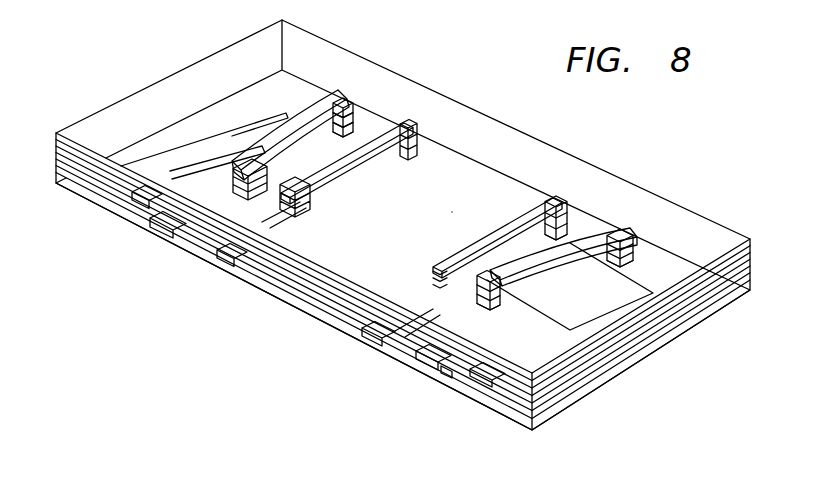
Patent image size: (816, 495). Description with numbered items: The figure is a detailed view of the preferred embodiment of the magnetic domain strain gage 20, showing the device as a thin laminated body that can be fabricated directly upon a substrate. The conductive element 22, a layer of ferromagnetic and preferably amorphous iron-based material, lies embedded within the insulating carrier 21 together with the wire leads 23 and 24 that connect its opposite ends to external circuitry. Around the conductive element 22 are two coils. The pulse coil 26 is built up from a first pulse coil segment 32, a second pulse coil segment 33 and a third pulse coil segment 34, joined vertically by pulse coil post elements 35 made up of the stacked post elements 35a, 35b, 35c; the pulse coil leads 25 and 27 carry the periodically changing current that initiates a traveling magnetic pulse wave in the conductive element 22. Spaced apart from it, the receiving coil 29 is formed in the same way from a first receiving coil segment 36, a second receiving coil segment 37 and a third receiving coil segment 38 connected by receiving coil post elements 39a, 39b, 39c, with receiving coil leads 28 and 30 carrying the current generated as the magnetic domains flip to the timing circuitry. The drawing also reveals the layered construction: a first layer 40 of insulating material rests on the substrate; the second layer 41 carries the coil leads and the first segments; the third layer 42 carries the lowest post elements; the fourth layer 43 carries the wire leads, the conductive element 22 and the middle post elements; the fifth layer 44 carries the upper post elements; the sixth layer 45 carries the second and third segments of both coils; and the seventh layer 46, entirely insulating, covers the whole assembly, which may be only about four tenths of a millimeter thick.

The magnetic domain strain gage 20 is at (492, 58).
The insulating carrier 21 is at (510, 137).
The conductive element 22 is at (450, 213).
The wire lead 23 is at (200, 163).
The wire lead 24 is at (634, 287).
The pulse coil lead 25 is at (197, 200).
The pulse coil 26 is at (345, 92).
The pulse coil lead 27 is at (277, 222).
The receiving coil lead 28 is at (414, 302).
The receiving coil 29 is at (562, 196).
The receiving coil lead 30 is at (486, 322).
The first pulse coil segment 32 is at (270, 193).
The second pulse coil segment 33 is at (305, 112).
The third pulse coil segment 34 is at (376, 184).
The pulse coil post elements 35 is at (228, 193).
The pulse coil post element 35a is at (355, 122).
The pulse coil post element 35b is at (343, 124).
The pulse coil post element 35c is at (343, 134).
The first receiving coil segment 36 is at (550, 197).
The second receiving coil segment 37 is at (524, 218).
The third receiving coil segment 38 is at (624, 232).
The receiving coil post element 39a is at (432, 268).
The receiving coil post element 39b is at (430, 275).
The receiving coil post element 39c is at (670, 249).
The first layer 40 is at (505, 408).
The second layer 41 is at (392, 355).
The third layer 42 is at (349, 320).
The fourth layer 43 is at (318, 310).
The fifth layer 44 is at (292, 296).
The sixth layer 45 is at (262, 284).
The seventh layer 46 is at (113, 168).